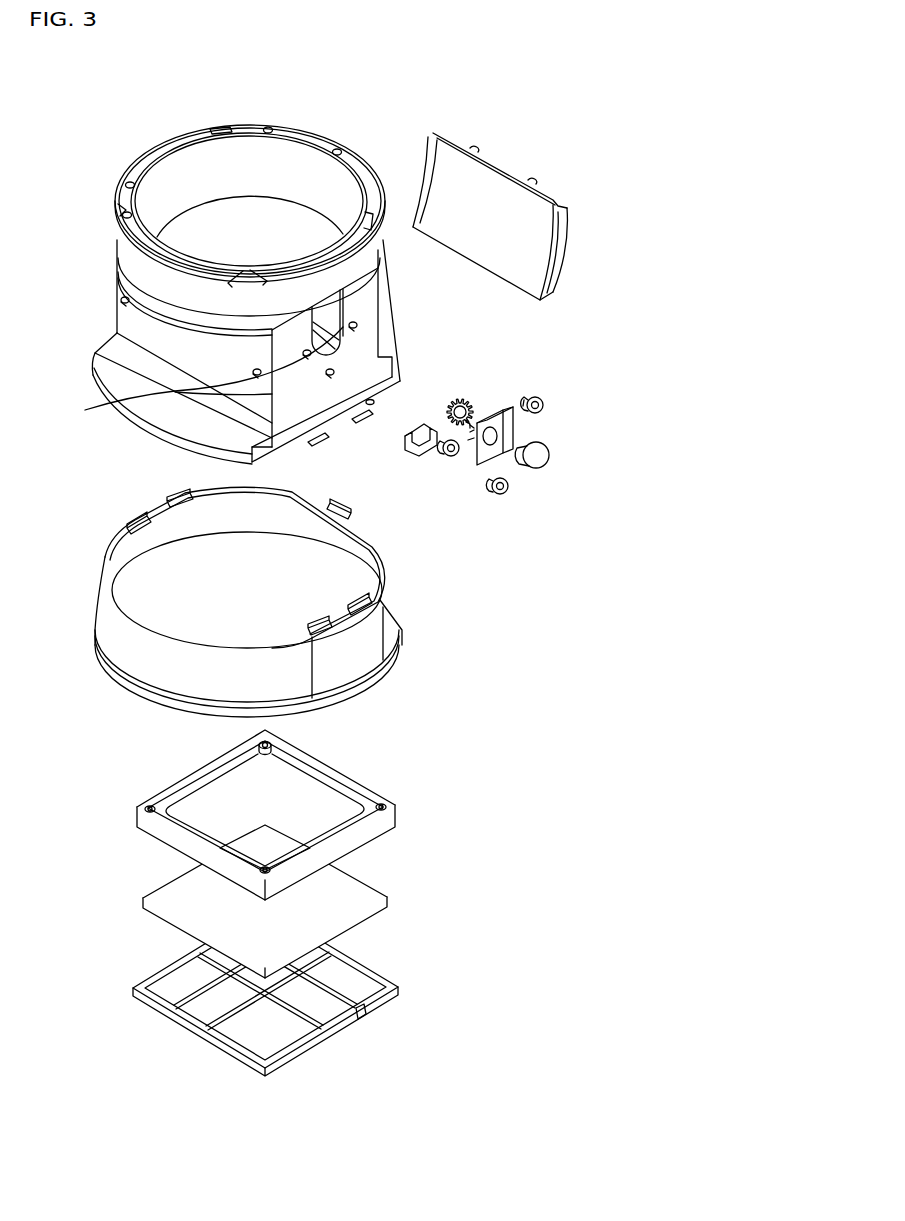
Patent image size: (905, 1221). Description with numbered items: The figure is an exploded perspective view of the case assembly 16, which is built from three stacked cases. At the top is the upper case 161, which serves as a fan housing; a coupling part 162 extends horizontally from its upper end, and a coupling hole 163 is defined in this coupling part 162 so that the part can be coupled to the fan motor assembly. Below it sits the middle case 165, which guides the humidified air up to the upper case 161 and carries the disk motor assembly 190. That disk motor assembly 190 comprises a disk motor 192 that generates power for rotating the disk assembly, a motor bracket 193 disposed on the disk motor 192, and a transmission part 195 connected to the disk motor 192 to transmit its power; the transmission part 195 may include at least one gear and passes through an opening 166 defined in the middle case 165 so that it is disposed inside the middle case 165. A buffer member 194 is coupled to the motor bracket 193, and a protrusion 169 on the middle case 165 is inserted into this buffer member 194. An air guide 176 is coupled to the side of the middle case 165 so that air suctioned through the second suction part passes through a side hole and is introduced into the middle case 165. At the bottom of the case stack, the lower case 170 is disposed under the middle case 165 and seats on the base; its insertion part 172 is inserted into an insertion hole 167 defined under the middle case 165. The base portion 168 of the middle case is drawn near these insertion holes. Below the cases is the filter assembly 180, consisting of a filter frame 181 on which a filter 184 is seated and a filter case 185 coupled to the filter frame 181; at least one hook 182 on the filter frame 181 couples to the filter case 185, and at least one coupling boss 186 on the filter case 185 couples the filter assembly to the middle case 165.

The case assembly 16 is at (327, 110).
The upper case 161 is at (345, 185).
The coupling part 162 is at (283, 125).
The coupling hole 163 is at (130, 181).
The middle case 165 is at (395, 327).
The opening 166 is at (343, 328).
The insertion hole 167 is at (320, 444).
The base 168 is at (87, 410).
The protrusion 169 is at (374, 406).
The lower case 170 is at (380, 625).
The insertion part 172 is at (375, 603).
The air guide 176 is at (492, 180).
The filter assembly 180 is at (341, 901).
The filter frame 181 is at (400, 990).
The hook 182 is at (368, 1013).
The filter 184 is at (388, 903).
The filter case 185 is at (397, 817).
The coupling boss 186 is at (268, 741).
The disk motor assembly 190 is at (522, 445).
The disk motor 192 is at (548, 458).
The motor bracket 193 is at (500, 420).
The buffer member 194 is at (546, 411).
The transmission part 195 is at (468, 406).